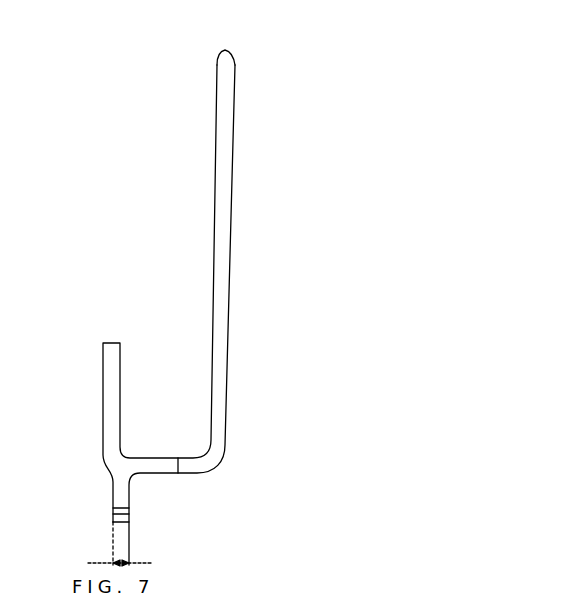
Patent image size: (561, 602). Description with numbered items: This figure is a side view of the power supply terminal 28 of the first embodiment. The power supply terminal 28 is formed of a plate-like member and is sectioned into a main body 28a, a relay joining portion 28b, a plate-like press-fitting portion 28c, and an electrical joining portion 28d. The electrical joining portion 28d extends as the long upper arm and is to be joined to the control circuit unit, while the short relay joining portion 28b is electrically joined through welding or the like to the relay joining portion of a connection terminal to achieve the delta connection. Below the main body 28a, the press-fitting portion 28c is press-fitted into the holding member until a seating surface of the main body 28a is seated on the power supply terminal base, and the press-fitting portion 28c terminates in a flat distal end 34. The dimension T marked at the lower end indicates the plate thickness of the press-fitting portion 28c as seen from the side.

The power supply terminal 28 is at (250, 87).
The main body 28a is at (218, 277).
The relay joining portion 28b is at (117, 373).
The plate-like press-fitting portion 28c is at (112, 490).
The electrical joining portion 28d is at (222, 69).
The flat distal end 34 is at (113, 522).
The thickness T is at (120, 553).